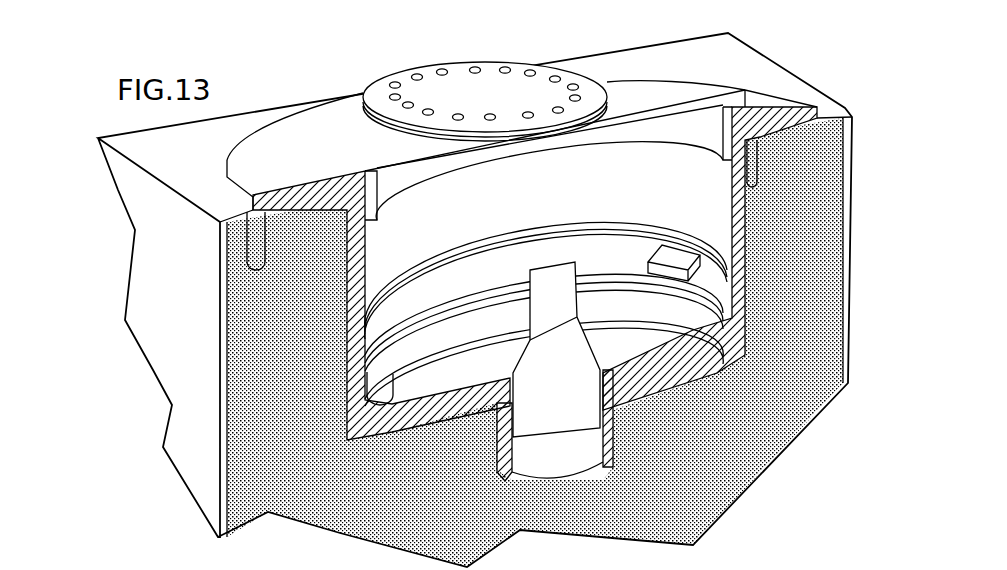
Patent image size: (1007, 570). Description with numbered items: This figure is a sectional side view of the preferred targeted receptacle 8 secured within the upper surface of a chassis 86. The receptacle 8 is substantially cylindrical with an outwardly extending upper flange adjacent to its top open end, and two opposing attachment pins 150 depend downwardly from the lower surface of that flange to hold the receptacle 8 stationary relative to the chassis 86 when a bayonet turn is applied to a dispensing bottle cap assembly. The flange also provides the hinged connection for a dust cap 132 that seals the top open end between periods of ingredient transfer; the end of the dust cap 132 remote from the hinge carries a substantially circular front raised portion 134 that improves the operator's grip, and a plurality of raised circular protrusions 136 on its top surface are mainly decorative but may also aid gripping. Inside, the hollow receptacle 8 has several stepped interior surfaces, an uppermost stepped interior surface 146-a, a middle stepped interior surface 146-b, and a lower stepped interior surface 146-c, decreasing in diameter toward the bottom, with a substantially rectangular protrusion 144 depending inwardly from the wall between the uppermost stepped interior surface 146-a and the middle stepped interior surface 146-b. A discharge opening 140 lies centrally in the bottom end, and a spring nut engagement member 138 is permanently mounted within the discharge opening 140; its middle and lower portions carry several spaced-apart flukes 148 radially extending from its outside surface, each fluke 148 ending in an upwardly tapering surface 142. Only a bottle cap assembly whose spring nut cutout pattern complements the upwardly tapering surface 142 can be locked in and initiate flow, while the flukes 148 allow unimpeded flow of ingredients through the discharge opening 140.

The receptacle 8 is at (260, 155).
The chassis 86 is at (173, 157).
The dust cap 132 is at (712, 80).
The front raised portion 134 is at (377, 88).
The raised circular protrusions 136 is at (492, 113).
The spring nut engagement member 138 is at (552, 402).
The discharge opening 140 is at (551, 447).
The upwardly tapering surface 142 is at (518, 353).
The protrusion 144 is at (647, 230).
The uppermost stepped interior surface 146-a is at (687, 242).
The middle stepped interior surface 146-b is at (544, 286).
The lower stepped interior surface 146-c is at (640, 355).
The flukes 148 is at (590, 402).
The attachment pins 150 is at (253, 243).